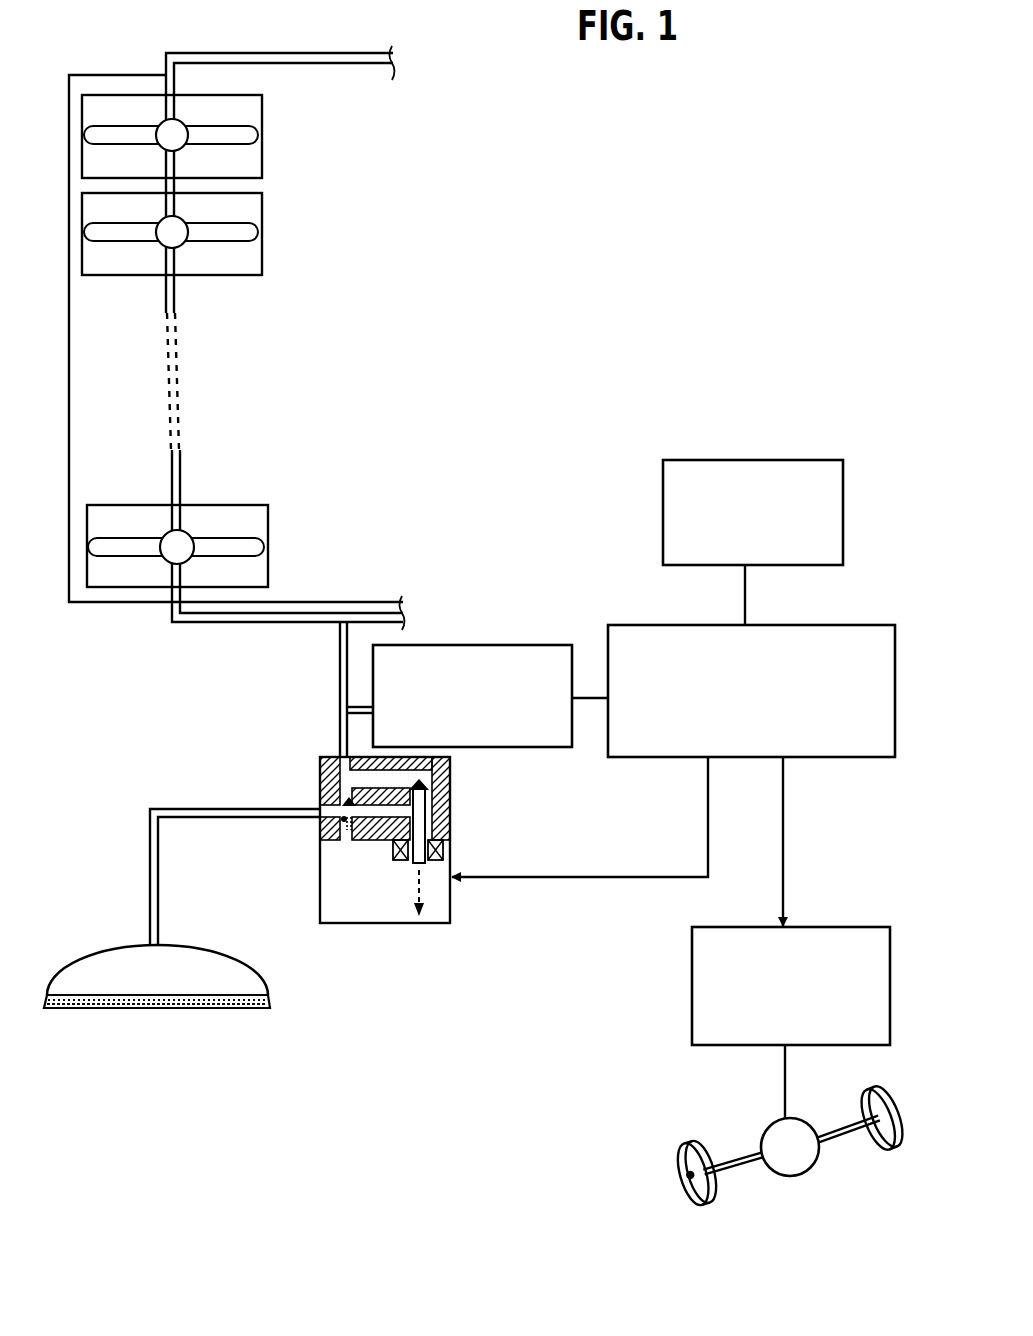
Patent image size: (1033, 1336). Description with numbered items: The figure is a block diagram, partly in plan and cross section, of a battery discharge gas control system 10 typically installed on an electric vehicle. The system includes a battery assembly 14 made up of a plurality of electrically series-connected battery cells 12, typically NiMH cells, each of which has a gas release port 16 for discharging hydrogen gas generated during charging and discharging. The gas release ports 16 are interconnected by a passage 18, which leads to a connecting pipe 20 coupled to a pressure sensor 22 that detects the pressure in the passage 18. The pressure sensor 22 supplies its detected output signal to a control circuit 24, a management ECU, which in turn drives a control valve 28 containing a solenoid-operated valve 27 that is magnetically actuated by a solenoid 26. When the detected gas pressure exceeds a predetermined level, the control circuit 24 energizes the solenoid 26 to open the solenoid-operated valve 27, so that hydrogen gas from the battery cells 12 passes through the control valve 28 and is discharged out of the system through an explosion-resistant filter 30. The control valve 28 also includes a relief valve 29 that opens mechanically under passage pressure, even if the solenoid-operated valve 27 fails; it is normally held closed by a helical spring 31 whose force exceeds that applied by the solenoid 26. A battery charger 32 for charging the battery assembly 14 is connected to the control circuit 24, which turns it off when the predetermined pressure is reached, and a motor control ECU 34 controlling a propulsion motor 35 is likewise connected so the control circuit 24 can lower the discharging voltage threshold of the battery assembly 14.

The battery discharge gas control system 10 is at (305, 314).
The battery cell 12 is at (253, 163).
The battery assembly 14 is at (291, 202).
The gas release port 16 is at (178, 130).
The passage 18 is at (180, 471).
The connecting pipe 20 is at (340, 653).
The pressure sensor 22 is at (489, 645).
The control circuit (management ECU) 24 is at (833, 757).
The solenoid 26 is at (449, 842).
The solenoid-operated valve 27 is at (437, 815).
The control valve 28 is at (367, 843).
The relief valve 29 is at (328, 793).
The explosion-resistant filter 30 is at (220, 967).
The helical spring 31 is at (320, 823).
The battery charger 32 is at (790, 460).
The motor control ECU 34 is at (813, 927).
The motor 35 is at (770, 1125).